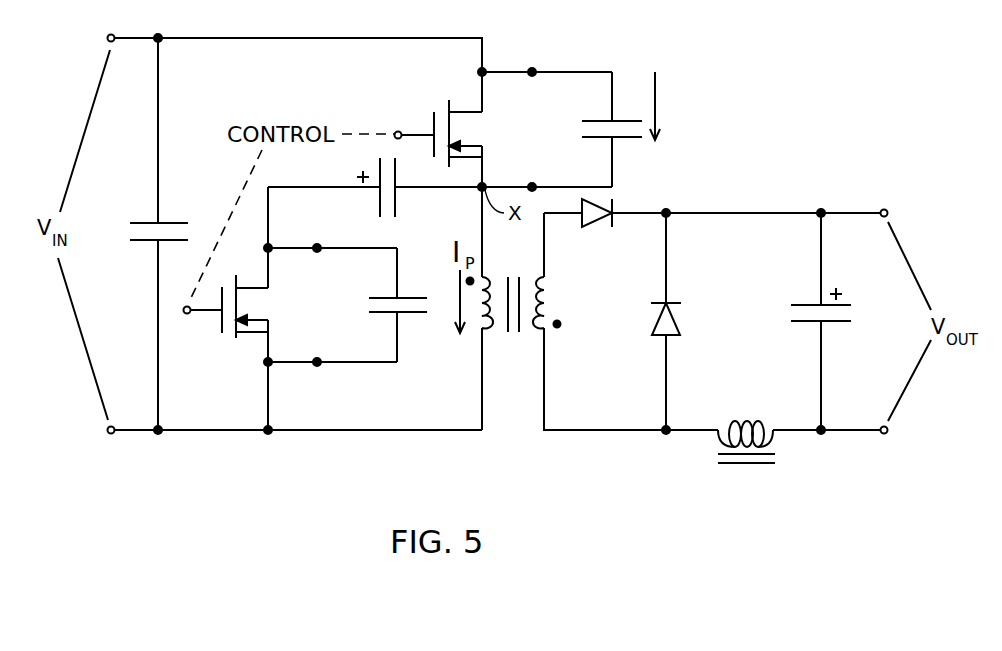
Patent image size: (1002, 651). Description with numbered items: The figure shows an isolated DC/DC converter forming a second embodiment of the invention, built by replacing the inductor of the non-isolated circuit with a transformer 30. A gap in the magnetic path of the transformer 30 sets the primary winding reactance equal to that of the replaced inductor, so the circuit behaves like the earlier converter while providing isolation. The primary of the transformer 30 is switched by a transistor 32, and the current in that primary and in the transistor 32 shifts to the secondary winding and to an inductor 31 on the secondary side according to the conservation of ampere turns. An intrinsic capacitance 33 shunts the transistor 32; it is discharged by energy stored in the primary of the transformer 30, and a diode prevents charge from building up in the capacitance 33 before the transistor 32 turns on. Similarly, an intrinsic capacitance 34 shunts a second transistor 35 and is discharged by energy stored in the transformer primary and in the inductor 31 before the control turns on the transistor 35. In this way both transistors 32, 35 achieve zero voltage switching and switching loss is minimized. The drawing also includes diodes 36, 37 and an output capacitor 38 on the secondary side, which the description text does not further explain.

The transformer 30 is at (505, 333).
The inductor 31 is at (748, 420).
The transistor 32 is at (236, 335).
The intrinsic capacitance 33 is at (383, 313).
The intrinsic capacitance 34 is at (626, 138).
The transistor 35 is at (447, 111).
The diode 36 is at (670, 302).
The diode 37 is at (617, 207).
The output capacitor 38 is at (850, 304).